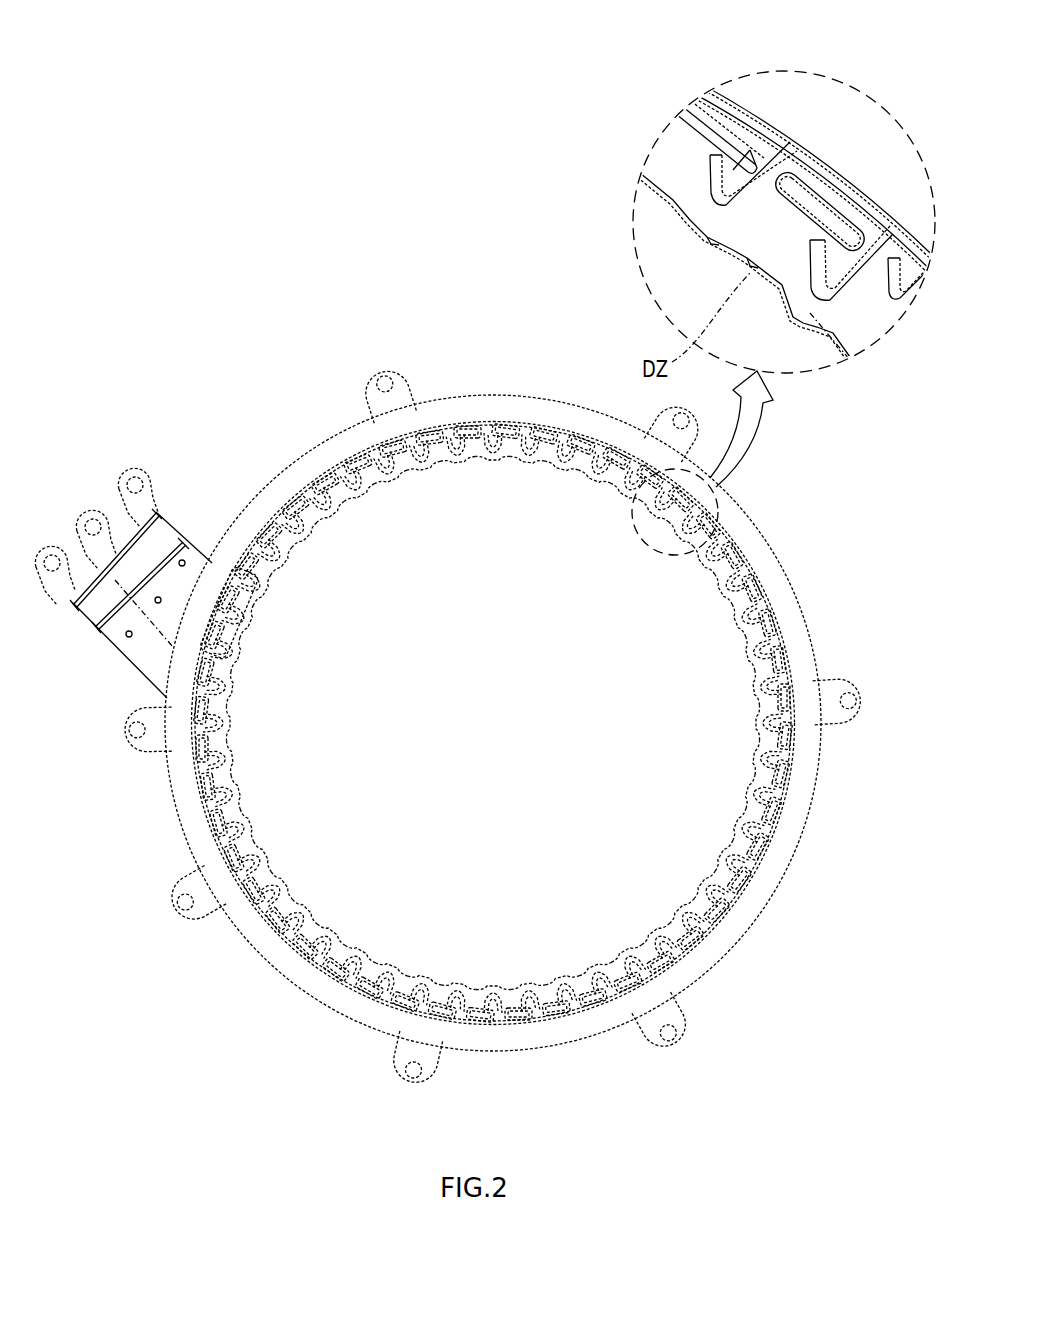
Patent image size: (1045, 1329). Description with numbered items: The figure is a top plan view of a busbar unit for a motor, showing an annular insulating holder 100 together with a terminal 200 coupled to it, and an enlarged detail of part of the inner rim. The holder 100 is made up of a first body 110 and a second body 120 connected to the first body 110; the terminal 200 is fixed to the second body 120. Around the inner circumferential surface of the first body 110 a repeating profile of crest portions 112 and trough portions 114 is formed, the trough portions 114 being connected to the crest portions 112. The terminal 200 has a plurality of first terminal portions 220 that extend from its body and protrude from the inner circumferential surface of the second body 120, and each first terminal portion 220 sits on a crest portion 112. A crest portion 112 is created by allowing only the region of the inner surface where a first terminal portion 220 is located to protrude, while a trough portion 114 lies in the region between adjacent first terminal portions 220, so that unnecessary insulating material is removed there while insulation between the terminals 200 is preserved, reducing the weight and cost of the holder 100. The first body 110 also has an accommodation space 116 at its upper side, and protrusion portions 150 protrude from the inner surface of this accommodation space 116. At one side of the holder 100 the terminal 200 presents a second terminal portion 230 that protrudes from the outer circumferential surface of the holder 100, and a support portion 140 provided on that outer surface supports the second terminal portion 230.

The holder 100 is at (510, 726).
The first body 110 is at (743, 848).
The crest portion 112 is at (700, 232).
The trough portion 114 is at (745, 262).
The accommodation space 116 is at (740, 170).
The second body 120 is at (757, 923).
The support portion 140 is at (138, 650).
The protrusion portion 150 is at (817, 200).
The terminal 200 is at (135, 551).
The first terminal portion 220 is at (750, 165).
The second terminal portion 230 is at (160, 505).